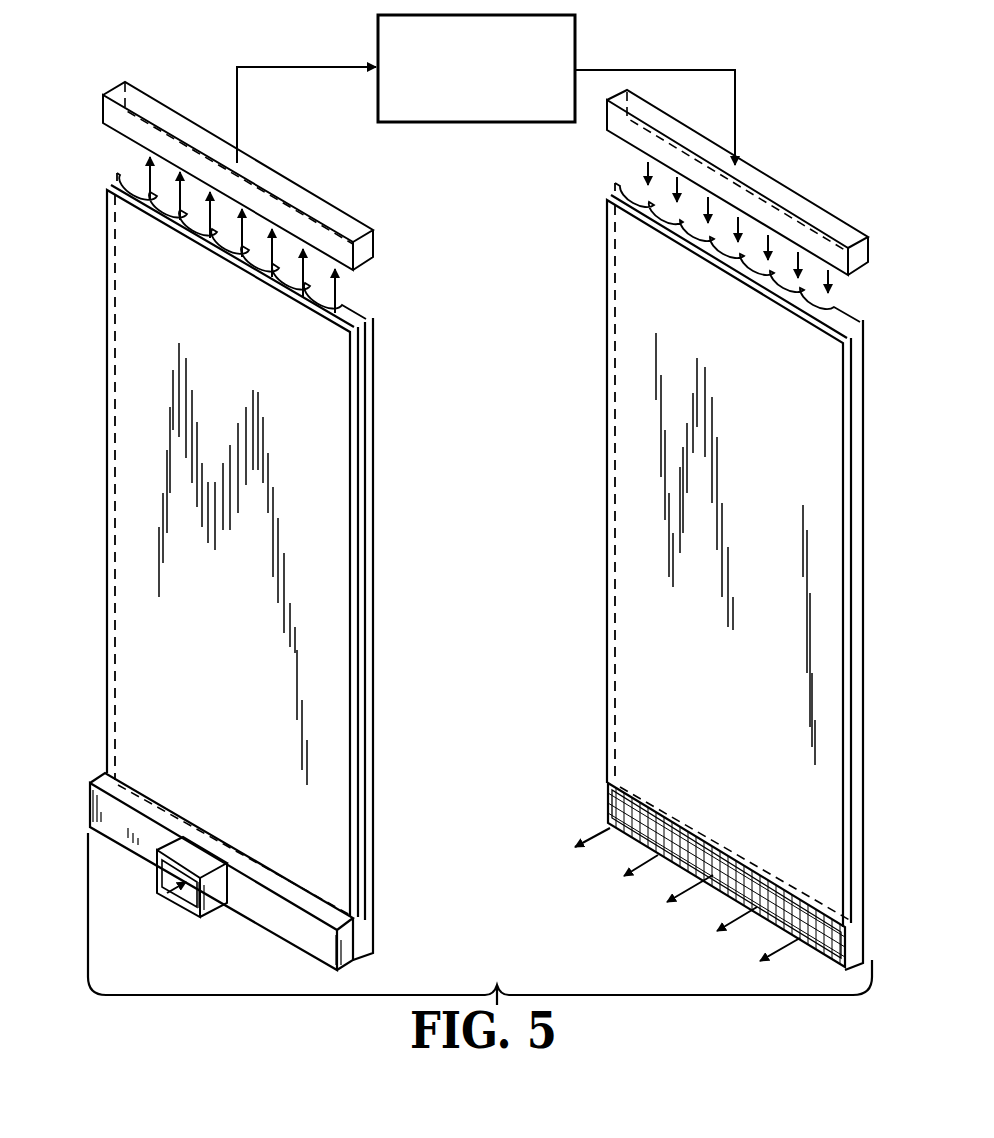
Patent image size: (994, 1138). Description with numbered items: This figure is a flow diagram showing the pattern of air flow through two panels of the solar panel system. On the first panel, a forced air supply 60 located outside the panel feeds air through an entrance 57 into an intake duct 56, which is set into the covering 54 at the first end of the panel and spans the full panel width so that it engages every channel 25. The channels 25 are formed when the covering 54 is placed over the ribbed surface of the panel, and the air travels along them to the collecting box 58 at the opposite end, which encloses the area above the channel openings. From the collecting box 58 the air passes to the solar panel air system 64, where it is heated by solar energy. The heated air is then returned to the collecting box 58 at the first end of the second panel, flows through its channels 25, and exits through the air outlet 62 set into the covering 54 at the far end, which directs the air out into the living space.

The channels 25 is at (270, 282).
The covering 54 is at (310, 448).
The intake duct 56 is at (103, 783).
The entrance 57 is at (195, 852).
The collecting box 58 is at (302, 198).
The forced air supply 60 is at (168, 893).
The air outlet 62 is at (610, 808).
The solar panel air system 64 is at (480, 122).